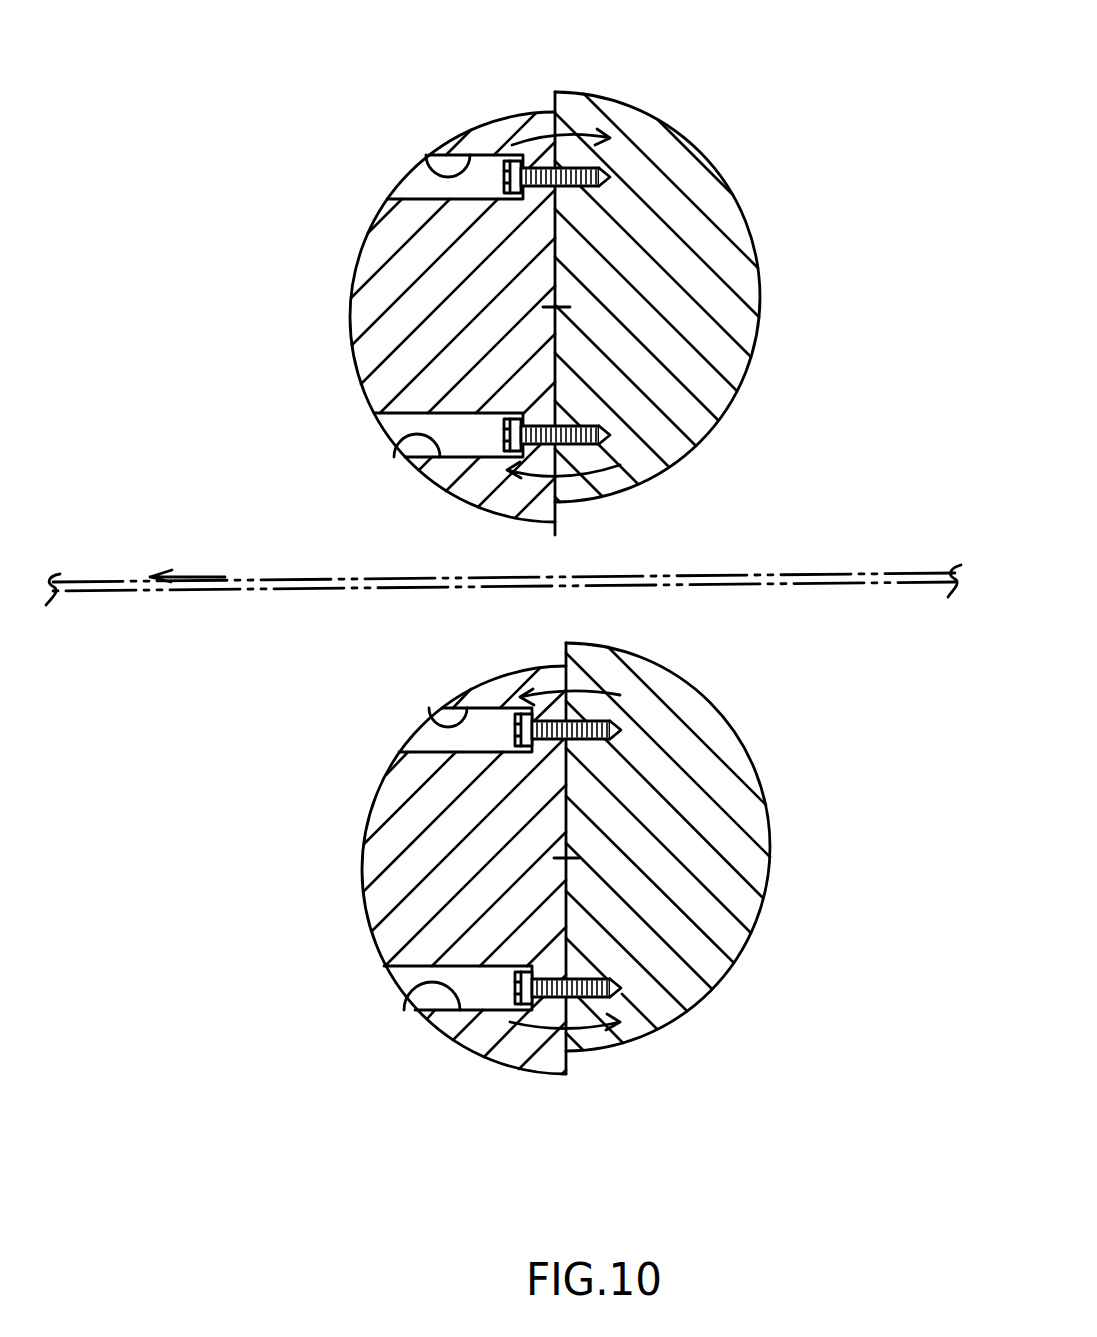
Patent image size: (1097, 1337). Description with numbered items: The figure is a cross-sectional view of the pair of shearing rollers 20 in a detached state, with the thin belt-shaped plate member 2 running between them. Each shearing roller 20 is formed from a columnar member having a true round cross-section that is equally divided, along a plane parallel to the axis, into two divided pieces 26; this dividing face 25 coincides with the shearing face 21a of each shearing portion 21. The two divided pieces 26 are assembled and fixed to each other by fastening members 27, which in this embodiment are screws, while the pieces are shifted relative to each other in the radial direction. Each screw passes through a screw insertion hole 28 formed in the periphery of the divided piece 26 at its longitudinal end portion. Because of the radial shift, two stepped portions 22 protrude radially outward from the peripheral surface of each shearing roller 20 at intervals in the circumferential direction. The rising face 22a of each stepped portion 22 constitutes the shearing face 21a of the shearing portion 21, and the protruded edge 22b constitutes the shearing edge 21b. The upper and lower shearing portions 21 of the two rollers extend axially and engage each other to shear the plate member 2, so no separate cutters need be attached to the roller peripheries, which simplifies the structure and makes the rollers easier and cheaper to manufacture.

The plate member 2 is at (118, 580).
The shearing roller 20 is at (720, 170).
The shearing portion 21 is at (577, 585).
The stepped portion 22 is at (556, 93).
The shearing face 21a is at (581, 576).
The rising face 22a is at (555, 103).
The shearing edge 21b is at (582, 577).
The protruded edge 22b is at (555, 93).
The dividing face 25 is at (556, 286).
The divided piece 26 is at (372, 303).
The fastening member 27 is at (588, 188).
The screw insertion hole 28 is at (428, 165).